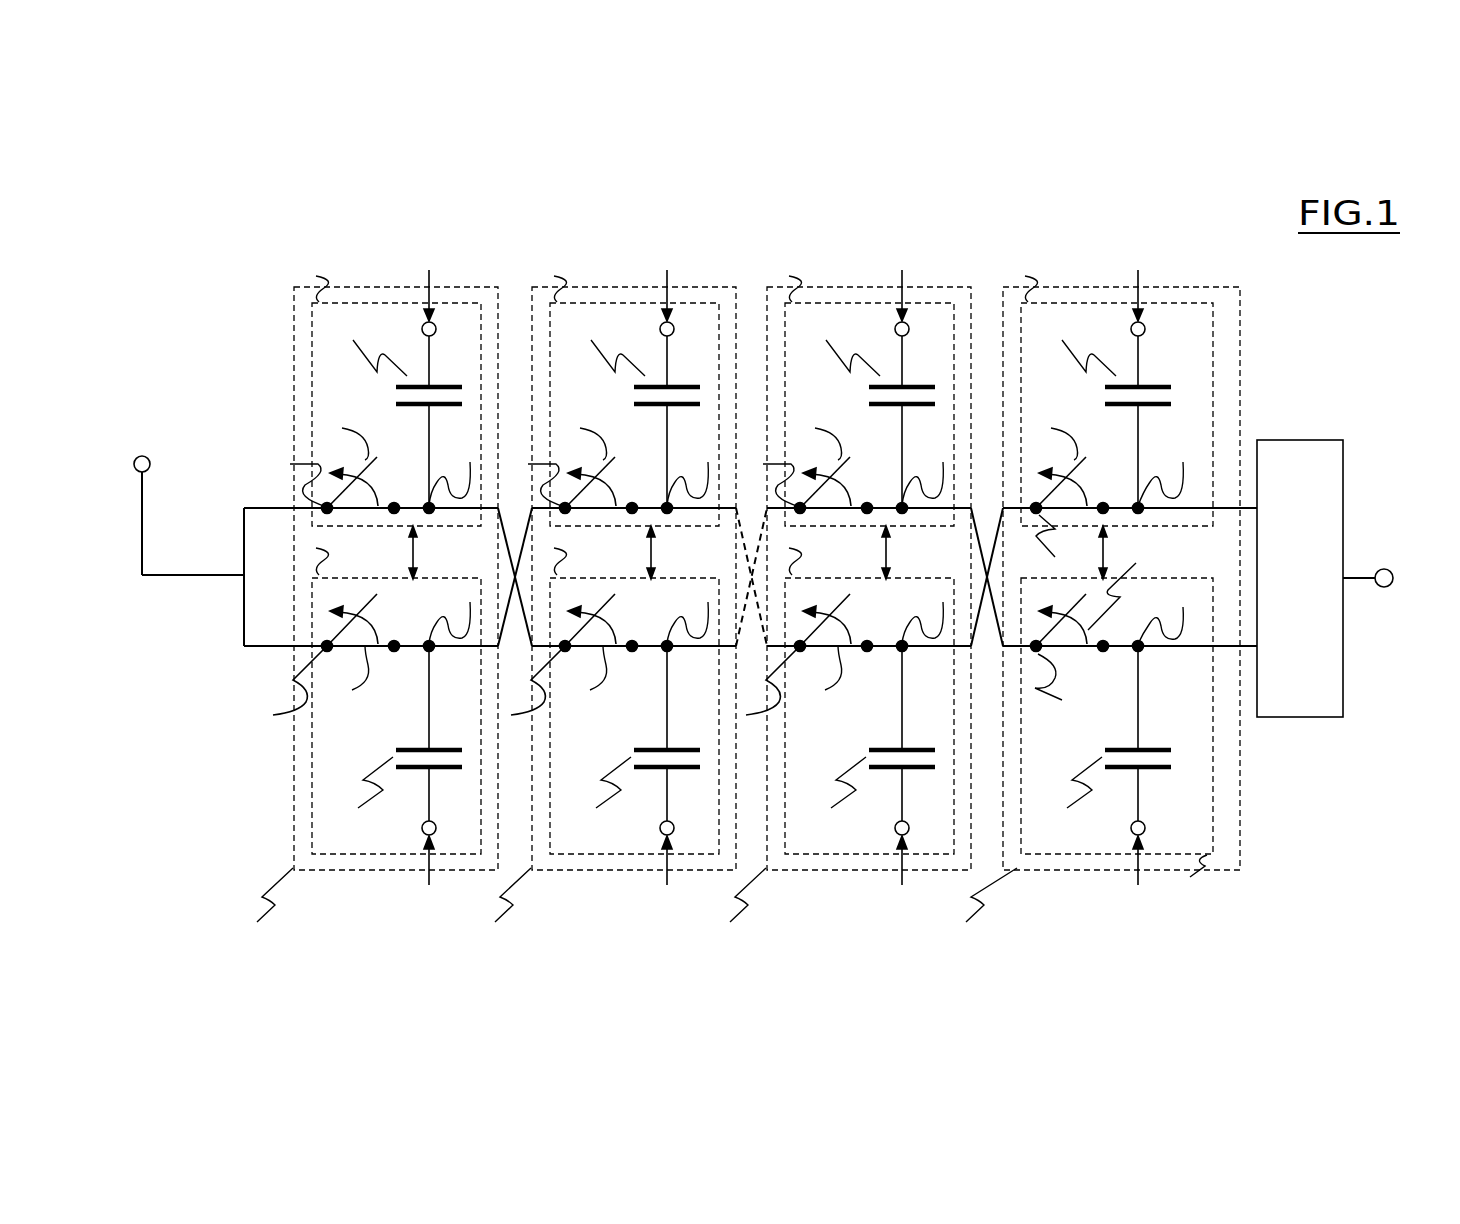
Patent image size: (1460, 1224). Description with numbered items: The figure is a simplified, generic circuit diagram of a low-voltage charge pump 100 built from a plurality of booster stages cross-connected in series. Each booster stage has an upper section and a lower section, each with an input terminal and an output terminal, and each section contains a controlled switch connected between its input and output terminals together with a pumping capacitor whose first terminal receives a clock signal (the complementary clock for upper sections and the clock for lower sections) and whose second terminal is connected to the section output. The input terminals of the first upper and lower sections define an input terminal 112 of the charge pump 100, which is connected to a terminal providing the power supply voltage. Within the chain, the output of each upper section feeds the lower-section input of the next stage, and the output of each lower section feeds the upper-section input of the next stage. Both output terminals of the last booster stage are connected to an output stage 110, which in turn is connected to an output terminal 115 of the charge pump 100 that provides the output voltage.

The low-voltage charge pump 100 is at (212, 790).
The output stage 110 is at (1292, 457).
The input terminal 112 is at (134, 468).
The output terminal 115 is at (1397, 572).